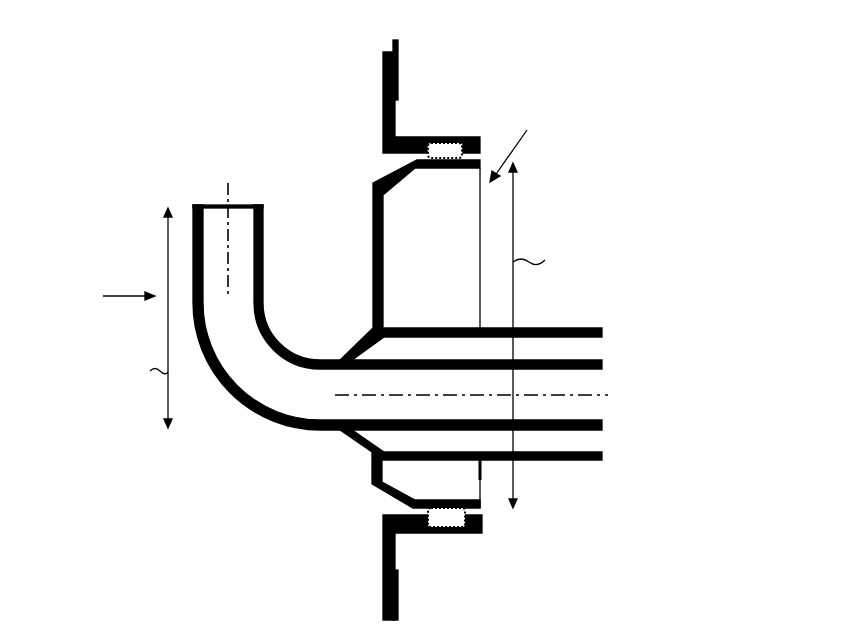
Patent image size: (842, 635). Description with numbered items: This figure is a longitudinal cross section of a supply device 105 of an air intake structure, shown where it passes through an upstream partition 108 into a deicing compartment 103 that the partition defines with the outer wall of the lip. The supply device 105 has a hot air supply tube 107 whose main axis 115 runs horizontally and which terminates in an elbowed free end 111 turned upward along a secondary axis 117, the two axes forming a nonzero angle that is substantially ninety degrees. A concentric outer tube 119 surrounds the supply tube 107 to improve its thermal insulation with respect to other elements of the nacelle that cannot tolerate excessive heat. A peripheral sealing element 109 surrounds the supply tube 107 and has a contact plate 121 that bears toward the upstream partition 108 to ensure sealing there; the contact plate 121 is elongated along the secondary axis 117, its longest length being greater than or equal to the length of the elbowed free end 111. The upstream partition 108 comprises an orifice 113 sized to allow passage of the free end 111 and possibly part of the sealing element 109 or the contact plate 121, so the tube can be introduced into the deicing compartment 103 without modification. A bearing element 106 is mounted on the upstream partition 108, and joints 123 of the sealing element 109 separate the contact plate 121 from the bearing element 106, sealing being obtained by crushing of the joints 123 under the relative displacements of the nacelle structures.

The deicing compartment 103 is at (92, 242).
The supply device 105 is at (529, 151).
The bearing element 106 is at (388, 87).
The hot air supply tube 107 is at (240, 408).
The upstream partition 108 is at (398, 60).
The peripheral sealing element 109 is at (365, 195).
The elbowed free end 111 is at (193, 206).
The orifice 113 is at (397, 162).
The main axis 115 is at (600, 395).
The secondary axis 117 is at (229, 187).
The concentric outer tube 119 is at (576, 328).
The contact plate 121 is at (371, 236).
The joint 123 is at (444, 152).